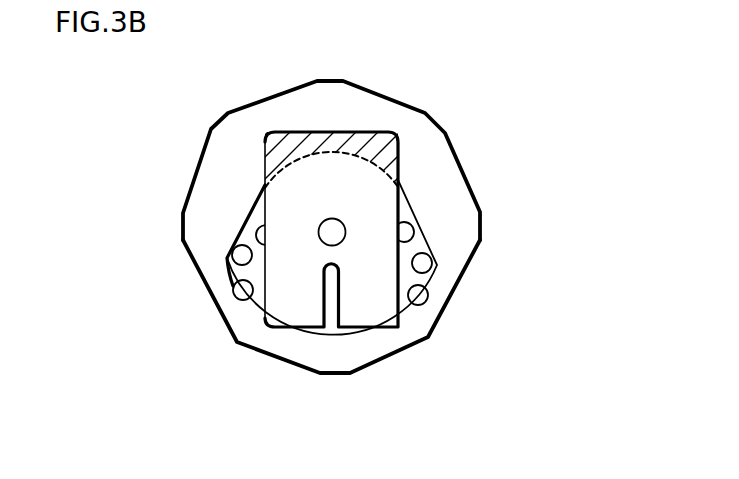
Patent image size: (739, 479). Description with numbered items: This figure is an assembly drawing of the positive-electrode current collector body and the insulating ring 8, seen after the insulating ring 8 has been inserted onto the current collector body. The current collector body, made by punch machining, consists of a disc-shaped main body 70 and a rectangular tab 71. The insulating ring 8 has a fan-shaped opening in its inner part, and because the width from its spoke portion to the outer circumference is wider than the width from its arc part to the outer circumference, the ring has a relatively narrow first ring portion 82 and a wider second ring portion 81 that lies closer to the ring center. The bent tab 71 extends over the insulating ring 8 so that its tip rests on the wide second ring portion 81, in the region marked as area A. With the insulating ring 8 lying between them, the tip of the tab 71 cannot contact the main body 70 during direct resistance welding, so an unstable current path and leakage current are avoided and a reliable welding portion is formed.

The insulating ring 8 is at (482, 100).
The second ring portion 81 is at (343, 93).
The first ring portion 82 is at (332, 363).
The main body 70 is at (430, 280).
The tab 71 is at (386, 203).
The area A is at (274, 146).